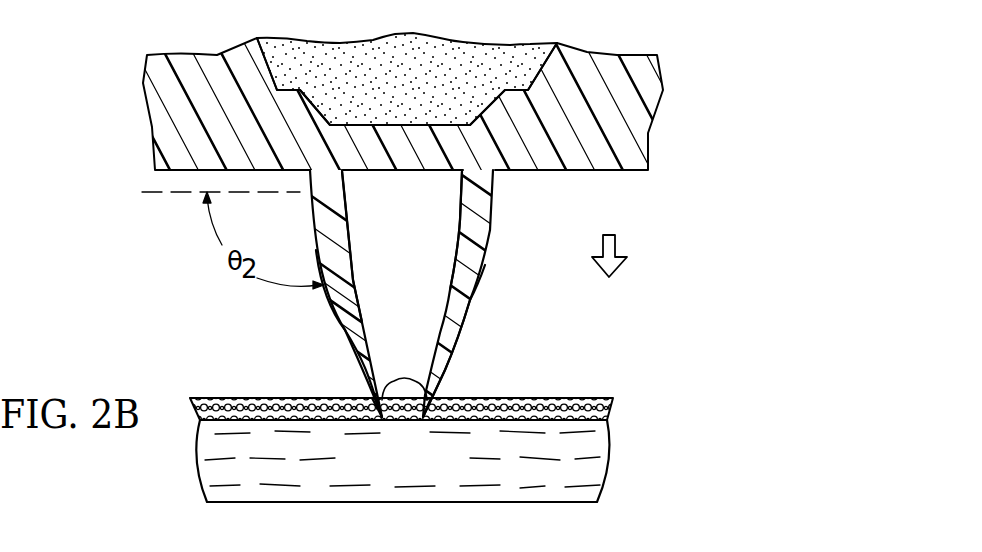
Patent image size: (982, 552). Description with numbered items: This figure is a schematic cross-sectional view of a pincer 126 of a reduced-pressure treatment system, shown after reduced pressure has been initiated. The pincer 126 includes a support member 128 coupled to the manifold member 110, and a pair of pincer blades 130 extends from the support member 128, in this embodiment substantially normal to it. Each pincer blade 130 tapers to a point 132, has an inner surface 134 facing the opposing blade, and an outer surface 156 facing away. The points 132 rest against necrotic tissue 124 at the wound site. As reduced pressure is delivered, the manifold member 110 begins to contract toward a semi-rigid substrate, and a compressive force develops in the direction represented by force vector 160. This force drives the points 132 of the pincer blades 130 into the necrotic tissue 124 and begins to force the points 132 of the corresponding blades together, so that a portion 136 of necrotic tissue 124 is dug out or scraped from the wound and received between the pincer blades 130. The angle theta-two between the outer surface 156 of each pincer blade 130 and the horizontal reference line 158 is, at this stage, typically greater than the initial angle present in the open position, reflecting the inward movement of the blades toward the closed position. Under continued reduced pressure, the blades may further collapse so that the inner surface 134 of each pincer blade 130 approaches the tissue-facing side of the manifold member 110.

The manifold member 110 is at (427, 92).
The necrotic tissue 124 is at (570, 400).
The pincer 126 is at (491, 242).
The support member 128 is at (617, 63).
The pincer blade 130 is at (450, 352).
The point 132 is at (381, 420).
The inner surface 134 is at (461, 213).
The portion of necrotic tissue 136 is at (400, 380).
The outer surface 156 is at (472, 312).
The horizontal reference line 158 is at (152, 193).
The force vector 160 is at (617, 245).